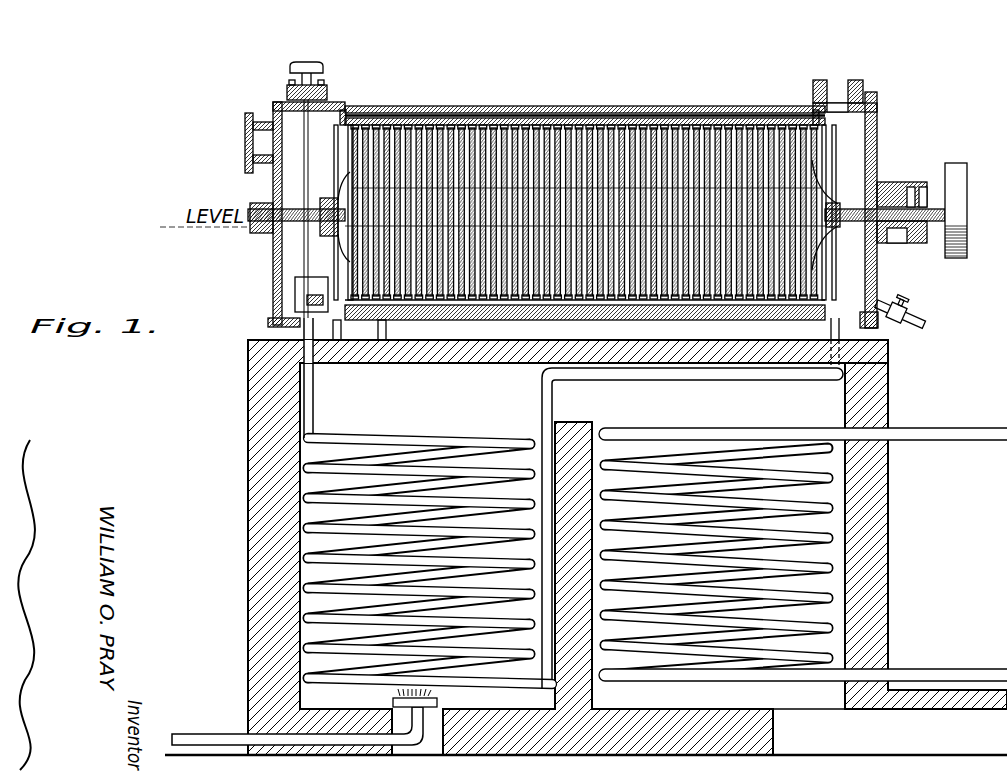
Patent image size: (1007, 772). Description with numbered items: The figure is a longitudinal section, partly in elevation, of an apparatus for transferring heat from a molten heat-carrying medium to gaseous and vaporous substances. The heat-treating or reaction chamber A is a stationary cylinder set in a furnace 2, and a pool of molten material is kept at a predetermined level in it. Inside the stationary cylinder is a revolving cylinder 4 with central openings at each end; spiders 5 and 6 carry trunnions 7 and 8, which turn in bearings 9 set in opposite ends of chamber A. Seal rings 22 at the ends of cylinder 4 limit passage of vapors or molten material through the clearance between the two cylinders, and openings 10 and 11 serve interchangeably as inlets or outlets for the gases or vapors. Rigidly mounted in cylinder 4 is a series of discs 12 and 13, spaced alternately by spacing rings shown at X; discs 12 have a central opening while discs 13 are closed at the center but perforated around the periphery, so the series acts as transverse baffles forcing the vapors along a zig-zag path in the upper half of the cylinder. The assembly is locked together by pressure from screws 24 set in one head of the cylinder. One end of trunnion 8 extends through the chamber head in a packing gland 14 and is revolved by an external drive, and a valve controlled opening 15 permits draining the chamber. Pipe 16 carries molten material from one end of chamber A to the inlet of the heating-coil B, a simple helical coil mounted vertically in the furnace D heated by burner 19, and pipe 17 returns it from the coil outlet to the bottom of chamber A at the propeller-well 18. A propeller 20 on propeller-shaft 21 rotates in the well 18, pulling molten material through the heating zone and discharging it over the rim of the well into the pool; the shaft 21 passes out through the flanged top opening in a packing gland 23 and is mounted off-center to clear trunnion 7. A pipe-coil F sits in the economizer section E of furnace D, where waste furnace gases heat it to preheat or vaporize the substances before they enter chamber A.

The furnace 2 is at (262, 530).
The cylinder 4 is at (673, 110).
The spider 5 is at (325, 222).
The spider 6 is at (826, 200).
The trunnion 7 is at (513, 125).
The trunnion 8 is at (883, 195).
The bearings 9 is at (253, 212).
The opening 10 is at (253, 142).
The opening 11 is at (838, 86).
The discs 12 is at (458, 125).
The discs 13 is at (600, 118).
The packing gland 14 is at (925, 187).
The valve controlled opening 15 is at (925, 322).
The pipe 16 is at (619, 374).
The pipe 17 is at (305, 413).
The propeller-well 18 is at (297, 293).
The burner 19 is at (440, 702).
The propeller 20 is at (312, 302).
The propeller-shaft 21 is at (306, 98).
The seal rings 22 is at (343, 112).
The packing gland 23 is at (288, 92).
The screws 24 is at (247, 120).
The heat-treating or reaction chamber A is at (387, 93).
The heating-coil B is at (430, 549).
The furnace D is at (608, 574).
The economizer section E is at (870, 524).
The pipe-coil F is at (746, 426).
The spacing rings X is at (566, 125).